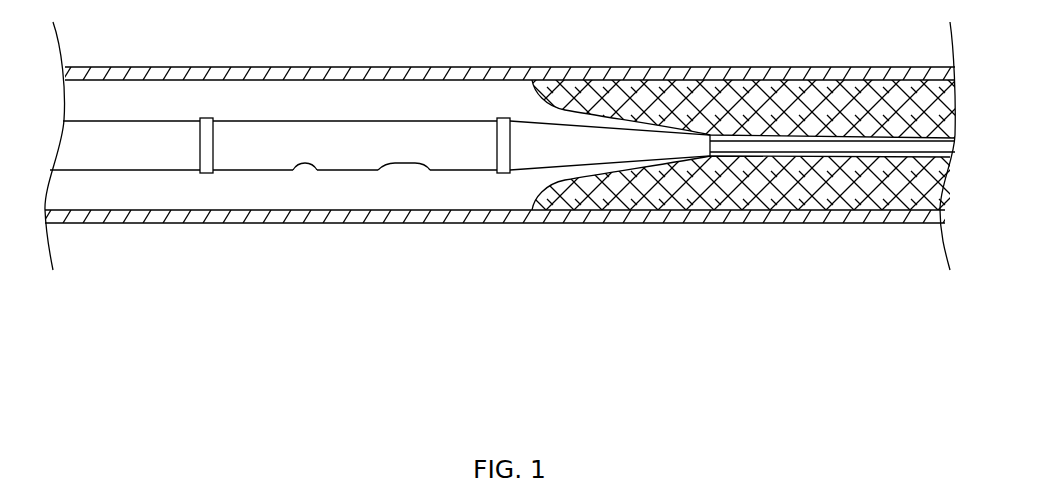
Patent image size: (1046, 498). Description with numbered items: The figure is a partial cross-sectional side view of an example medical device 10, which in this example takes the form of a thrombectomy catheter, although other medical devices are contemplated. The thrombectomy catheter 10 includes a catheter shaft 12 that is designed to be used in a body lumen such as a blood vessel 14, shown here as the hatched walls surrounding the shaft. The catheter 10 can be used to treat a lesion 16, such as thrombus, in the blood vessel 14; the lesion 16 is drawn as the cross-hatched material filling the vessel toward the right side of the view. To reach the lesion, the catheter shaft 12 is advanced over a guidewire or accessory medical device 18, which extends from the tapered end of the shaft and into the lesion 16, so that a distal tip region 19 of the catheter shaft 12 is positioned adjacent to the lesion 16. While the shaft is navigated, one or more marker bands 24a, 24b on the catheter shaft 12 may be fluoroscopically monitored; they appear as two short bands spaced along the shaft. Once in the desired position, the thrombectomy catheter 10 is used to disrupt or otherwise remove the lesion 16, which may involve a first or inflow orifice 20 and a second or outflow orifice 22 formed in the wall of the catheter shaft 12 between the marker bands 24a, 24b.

The medical device 10 is at (239, 115).
The catheter shaft 12 is at (357, 121).
The blood vessel 14 is at (480, 76).
The lesion 16 is at (700, 100).
The guidewire 18 is at (827, 146).
The distal tip region 19 is at (592, 155).
The inflow orifice 20 is at (405, 172).
The outflow orifice 22 is at (303, 173).
The marker band 24a is at (200, 146).
The marker band 24b is at (503, 175).